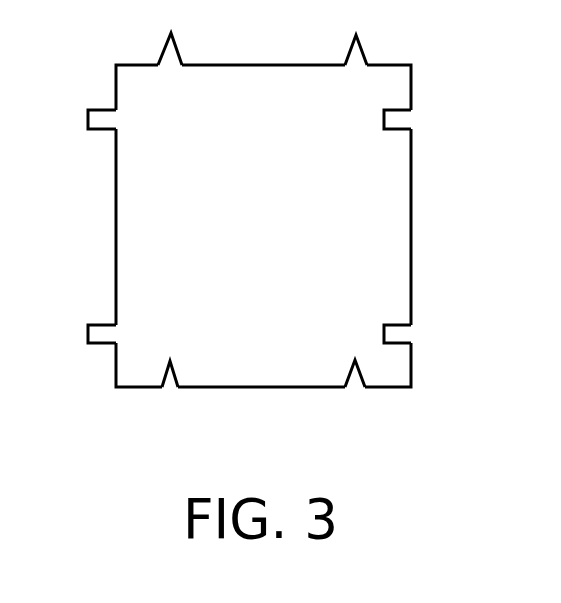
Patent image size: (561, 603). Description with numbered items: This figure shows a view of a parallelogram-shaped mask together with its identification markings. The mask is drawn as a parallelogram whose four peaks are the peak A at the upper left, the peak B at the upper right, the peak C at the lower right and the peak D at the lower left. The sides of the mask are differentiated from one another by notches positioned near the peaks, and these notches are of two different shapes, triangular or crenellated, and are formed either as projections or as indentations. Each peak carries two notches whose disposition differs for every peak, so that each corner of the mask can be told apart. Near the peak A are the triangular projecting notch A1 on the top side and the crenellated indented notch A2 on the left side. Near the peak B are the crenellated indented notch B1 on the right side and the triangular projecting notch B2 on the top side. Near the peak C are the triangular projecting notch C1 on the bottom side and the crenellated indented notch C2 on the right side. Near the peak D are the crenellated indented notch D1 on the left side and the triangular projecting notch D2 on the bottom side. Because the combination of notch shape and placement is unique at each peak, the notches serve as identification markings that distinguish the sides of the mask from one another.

The peak A is at (127, 76).
The notch A1 is at (170, 35).
The notch A2 is at (82, 120).
The peak B is at (399, 76).
The notch B1 is at (418, 121).
The notch B2 is at (356, 35).
The peak C is at (398, 382).
The notch C1 is at (356, 397).
The notch C2 is at (415, 340).
The peak D is at (129, 381).
The notch D1 is at (82, 340).
The notch D2 is at (171, 397).